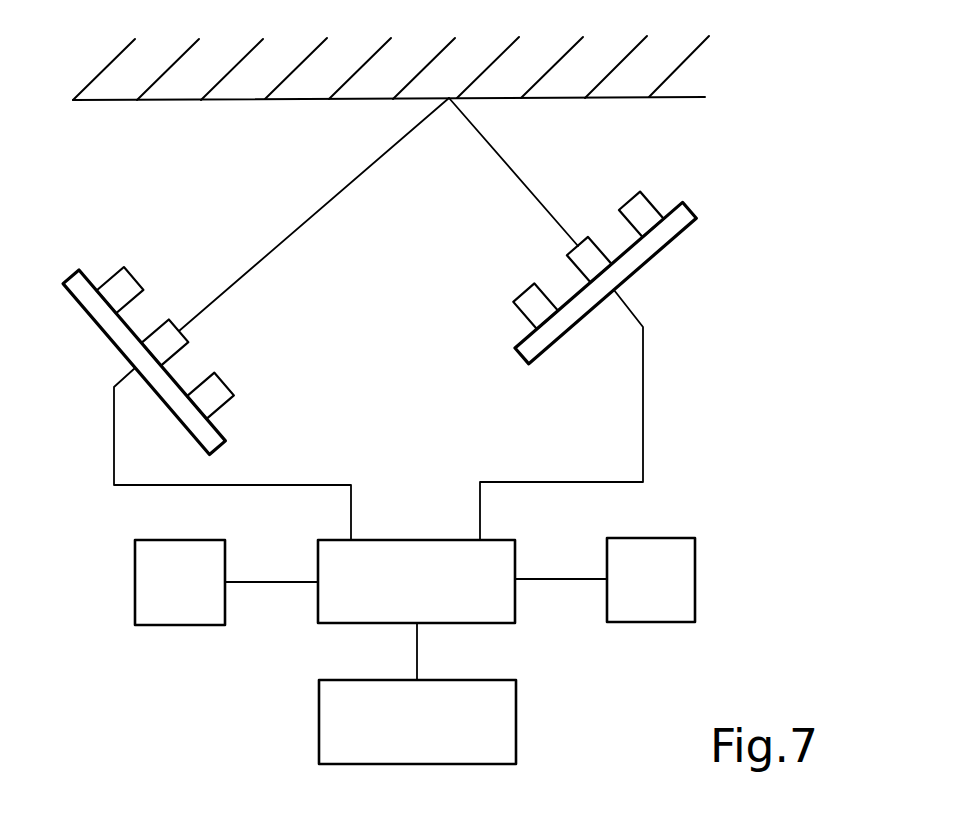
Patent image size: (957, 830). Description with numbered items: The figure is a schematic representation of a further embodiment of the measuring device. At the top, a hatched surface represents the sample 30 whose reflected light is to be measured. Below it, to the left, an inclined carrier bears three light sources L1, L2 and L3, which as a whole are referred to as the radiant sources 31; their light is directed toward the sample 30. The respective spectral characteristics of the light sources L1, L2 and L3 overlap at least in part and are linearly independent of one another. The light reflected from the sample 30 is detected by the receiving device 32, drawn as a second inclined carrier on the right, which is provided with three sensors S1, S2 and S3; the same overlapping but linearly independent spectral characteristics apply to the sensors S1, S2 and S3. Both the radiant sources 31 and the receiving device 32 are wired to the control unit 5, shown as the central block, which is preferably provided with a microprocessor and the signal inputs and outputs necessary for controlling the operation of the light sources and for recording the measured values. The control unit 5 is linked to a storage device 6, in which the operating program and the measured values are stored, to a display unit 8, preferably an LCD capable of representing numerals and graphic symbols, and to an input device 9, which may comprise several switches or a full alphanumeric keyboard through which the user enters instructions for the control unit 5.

The sample 30 is at (695, 68).
The radiant sources 31 is at (85, 306).
The receiving device 32 is at (685, 200).
The light source L1 is at (128, 267).
The light source L2 is at (187, 338).
The light source L3 is at (233, 383).
The sensor S1 is at (531, 282).
The sensor S2 is at (593, 248).
The sensor S3 is at (638, 192).
The control unit 5 is at (510, 598).
The storage device 6 is at (652, 617).
The display unit 8 is at (328, 727).
The input device 9 is at (187, 620).